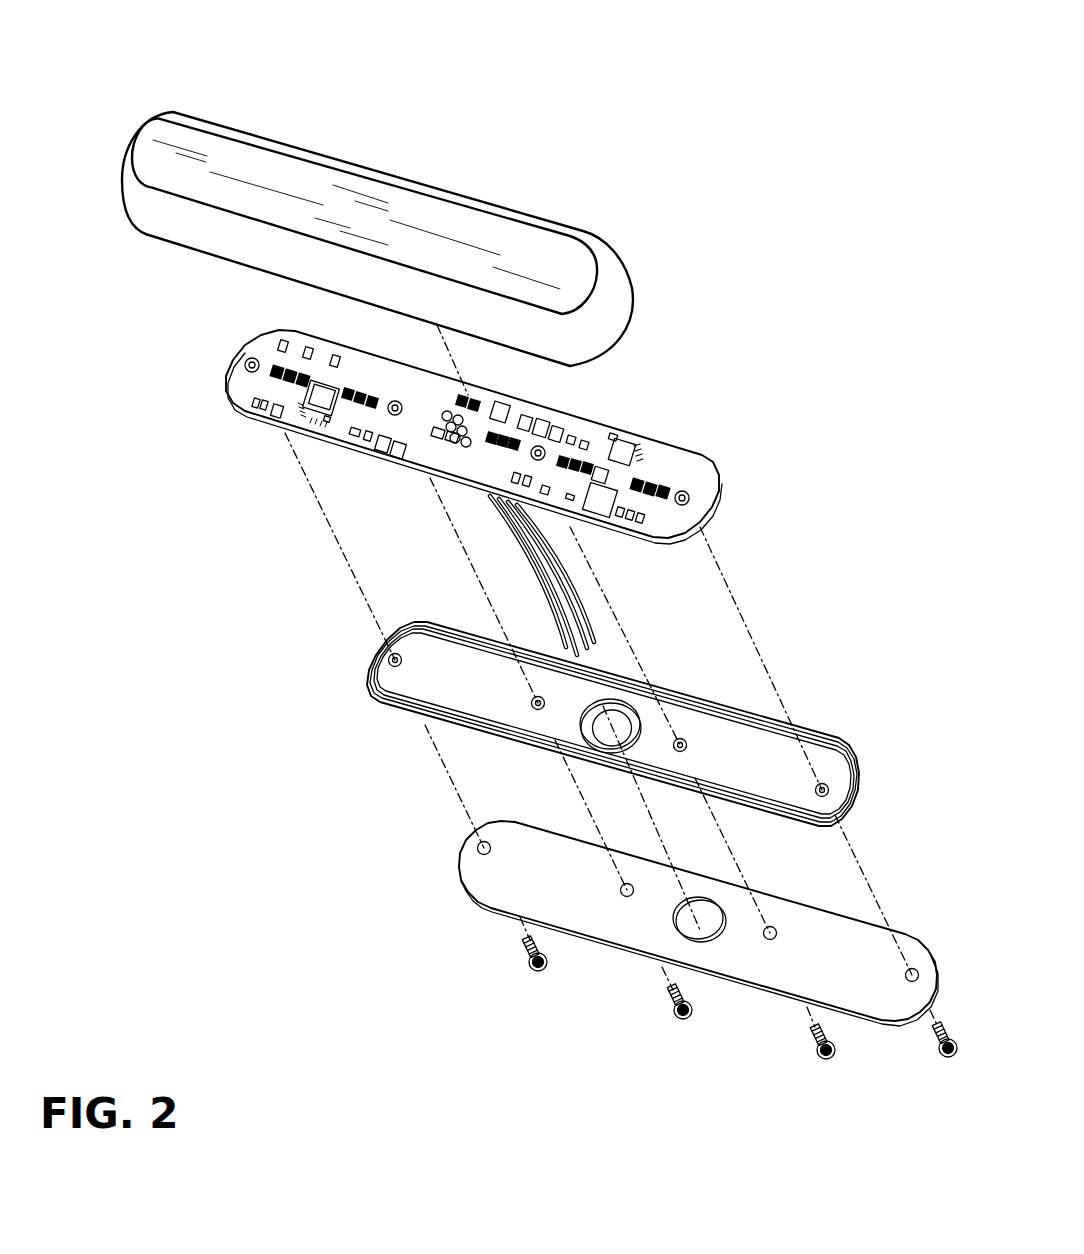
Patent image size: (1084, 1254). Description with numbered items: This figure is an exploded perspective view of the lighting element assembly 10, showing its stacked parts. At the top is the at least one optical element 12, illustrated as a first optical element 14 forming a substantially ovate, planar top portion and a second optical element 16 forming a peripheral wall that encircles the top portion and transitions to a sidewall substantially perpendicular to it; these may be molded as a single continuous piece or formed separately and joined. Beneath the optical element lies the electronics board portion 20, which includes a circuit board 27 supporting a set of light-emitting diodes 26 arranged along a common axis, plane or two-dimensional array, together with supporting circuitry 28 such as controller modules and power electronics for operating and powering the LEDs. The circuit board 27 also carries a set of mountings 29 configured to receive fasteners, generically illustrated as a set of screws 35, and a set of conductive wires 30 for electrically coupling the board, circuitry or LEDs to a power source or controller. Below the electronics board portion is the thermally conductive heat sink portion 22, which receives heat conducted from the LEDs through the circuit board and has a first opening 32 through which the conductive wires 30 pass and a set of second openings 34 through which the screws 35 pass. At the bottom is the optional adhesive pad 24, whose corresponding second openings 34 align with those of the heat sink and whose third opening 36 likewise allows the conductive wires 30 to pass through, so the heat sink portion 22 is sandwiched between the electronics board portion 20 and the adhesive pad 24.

The lighting element assembly 10 is at (645, 37).
The optical element 12 is at (699, 259).
The first optical element 14 is at (315, 175).
The second optical element 16 is at (610, 282).
The electronics board portion 20 is at (736, 515).
The heat sink portion 22 is at (838, 716).
The adhesive pad 24 is at (893, 872).
The light-emitting diodes 26 is at (660, 430).
The circuit board 27 is at (693, 468).
The supporting circuitry 28 is at (510, 412).
The mountings 29 is at (260, 363).
The conductive wires 30 is at (580, 571).
The first opening 32 is at (616, 699).
The second openings 34 is at (820, 787).
The screws 35 is at (529, 962).
The third opening 36 is at (686, 934).